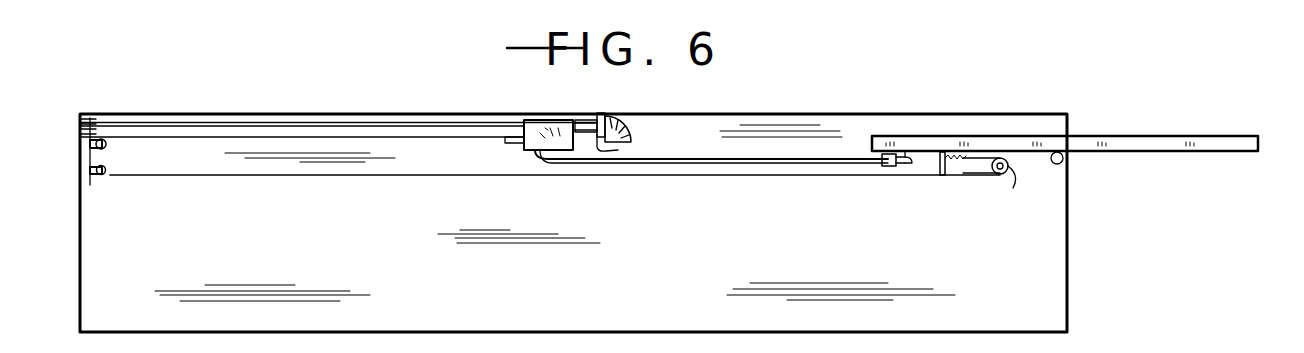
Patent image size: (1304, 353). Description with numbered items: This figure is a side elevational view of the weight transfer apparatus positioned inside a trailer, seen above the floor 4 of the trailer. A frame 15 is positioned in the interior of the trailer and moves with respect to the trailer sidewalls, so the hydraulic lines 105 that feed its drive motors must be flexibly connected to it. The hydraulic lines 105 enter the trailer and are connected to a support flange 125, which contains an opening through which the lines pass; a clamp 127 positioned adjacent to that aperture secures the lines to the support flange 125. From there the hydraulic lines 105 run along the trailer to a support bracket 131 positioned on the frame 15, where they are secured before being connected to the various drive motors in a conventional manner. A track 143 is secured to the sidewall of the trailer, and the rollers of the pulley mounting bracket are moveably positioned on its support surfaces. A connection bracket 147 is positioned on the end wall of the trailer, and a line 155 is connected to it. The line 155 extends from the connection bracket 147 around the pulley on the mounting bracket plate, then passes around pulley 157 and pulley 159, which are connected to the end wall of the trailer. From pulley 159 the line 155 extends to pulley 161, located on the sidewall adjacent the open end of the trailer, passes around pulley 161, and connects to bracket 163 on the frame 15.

The floor 4 is at (550, 331).
The frame 15 is at (1145, 132).
The hydraulic lines 105 is at (690, 164).
The support flange 125 is at (608, 118).
The clamp 127 is at (637, 143).
The support bracket 131 is at (898, 166).
The track 143 is at (330, 123).
The connection bracket 147 is at (90, 114).
The line 155 is at (190, 138).
The pulley 157 is at (106, 143).
The pulley 159 is at (108, 172).
The pulley 161 is at (1012, 190).
The bracket 163 is at (935, 178).